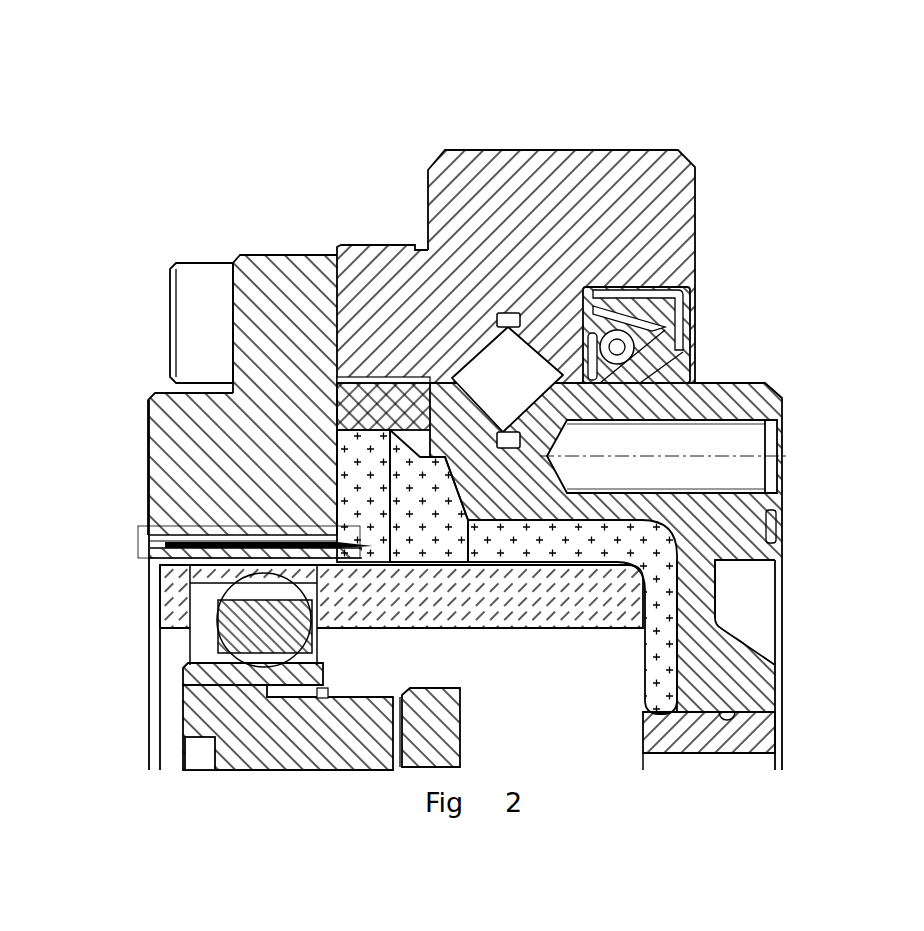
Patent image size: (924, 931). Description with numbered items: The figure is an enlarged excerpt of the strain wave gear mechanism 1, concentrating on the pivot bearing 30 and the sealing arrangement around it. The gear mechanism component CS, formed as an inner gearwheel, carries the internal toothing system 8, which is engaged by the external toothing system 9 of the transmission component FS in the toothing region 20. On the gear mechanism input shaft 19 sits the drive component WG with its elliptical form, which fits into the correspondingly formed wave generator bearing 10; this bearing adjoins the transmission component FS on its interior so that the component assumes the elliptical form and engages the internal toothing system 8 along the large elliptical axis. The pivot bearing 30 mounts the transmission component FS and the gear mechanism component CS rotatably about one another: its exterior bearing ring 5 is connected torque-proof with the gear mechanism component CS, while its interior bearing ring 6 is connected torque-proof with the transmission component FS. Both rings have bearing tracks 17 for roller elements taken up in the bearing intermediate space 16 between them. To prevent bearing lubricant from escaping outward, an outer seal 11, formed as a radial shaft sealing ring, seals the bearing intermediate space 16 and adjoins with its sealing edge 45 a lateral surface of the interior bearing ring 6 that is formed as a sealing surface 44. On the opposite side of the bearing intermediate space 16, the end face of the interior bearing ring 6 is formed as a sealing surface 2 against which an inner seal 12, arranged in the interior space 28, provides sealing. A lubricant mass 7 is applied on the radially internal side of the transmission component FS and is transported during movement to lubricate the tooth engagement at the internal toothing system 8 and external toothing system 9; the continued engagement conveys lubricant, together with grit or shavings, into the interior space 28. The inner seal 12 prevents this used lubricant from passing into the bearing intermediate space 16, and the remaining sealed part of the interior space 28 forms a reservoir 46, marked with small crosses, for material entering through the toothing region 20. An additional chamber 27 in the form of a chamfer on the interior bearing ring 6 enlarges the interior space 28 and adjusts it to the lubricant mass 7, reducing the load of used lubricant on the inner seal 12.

The strain wave gear mechanism 1 is at (172, 203).
The sealing surface 2 is at (335, 407).
The exterior bearing ring 5 is at (620, 148).
The interior bearing ring 6 is at (750, 398).
The lubricant mass 7 is at (165, 615).
The internal toothing system 8 is at (140, 528).
The external toothing system 9 is at (163, 560).
The wave generator bearing 10 is at (212, 676).
The outer seal 11 is at (683, 317).
The inner seal 12 is at (338, 358).
The bearing intermediate space 16 is at (508, 377).
The bearing tracks 17 is at (487, 352).
The gear mechanism input shaft 19 is at (425, 727).
The toothing region 20 is at (138, 540).
The additional chamber 27 is at (445, 522).
The interior space 28 is at (660, 562).
The pivot bearing 30 is at (700, 145).
The sealing surface 44 is at (733, 382).
The sealing edge 45 is at (670, 340).
The reservoir 46 is at (662, 594).
The gear mechanism component CS is at (168, 435).
The drive component WG is at (213, 713).
The transmission component FS is at (758, 730).